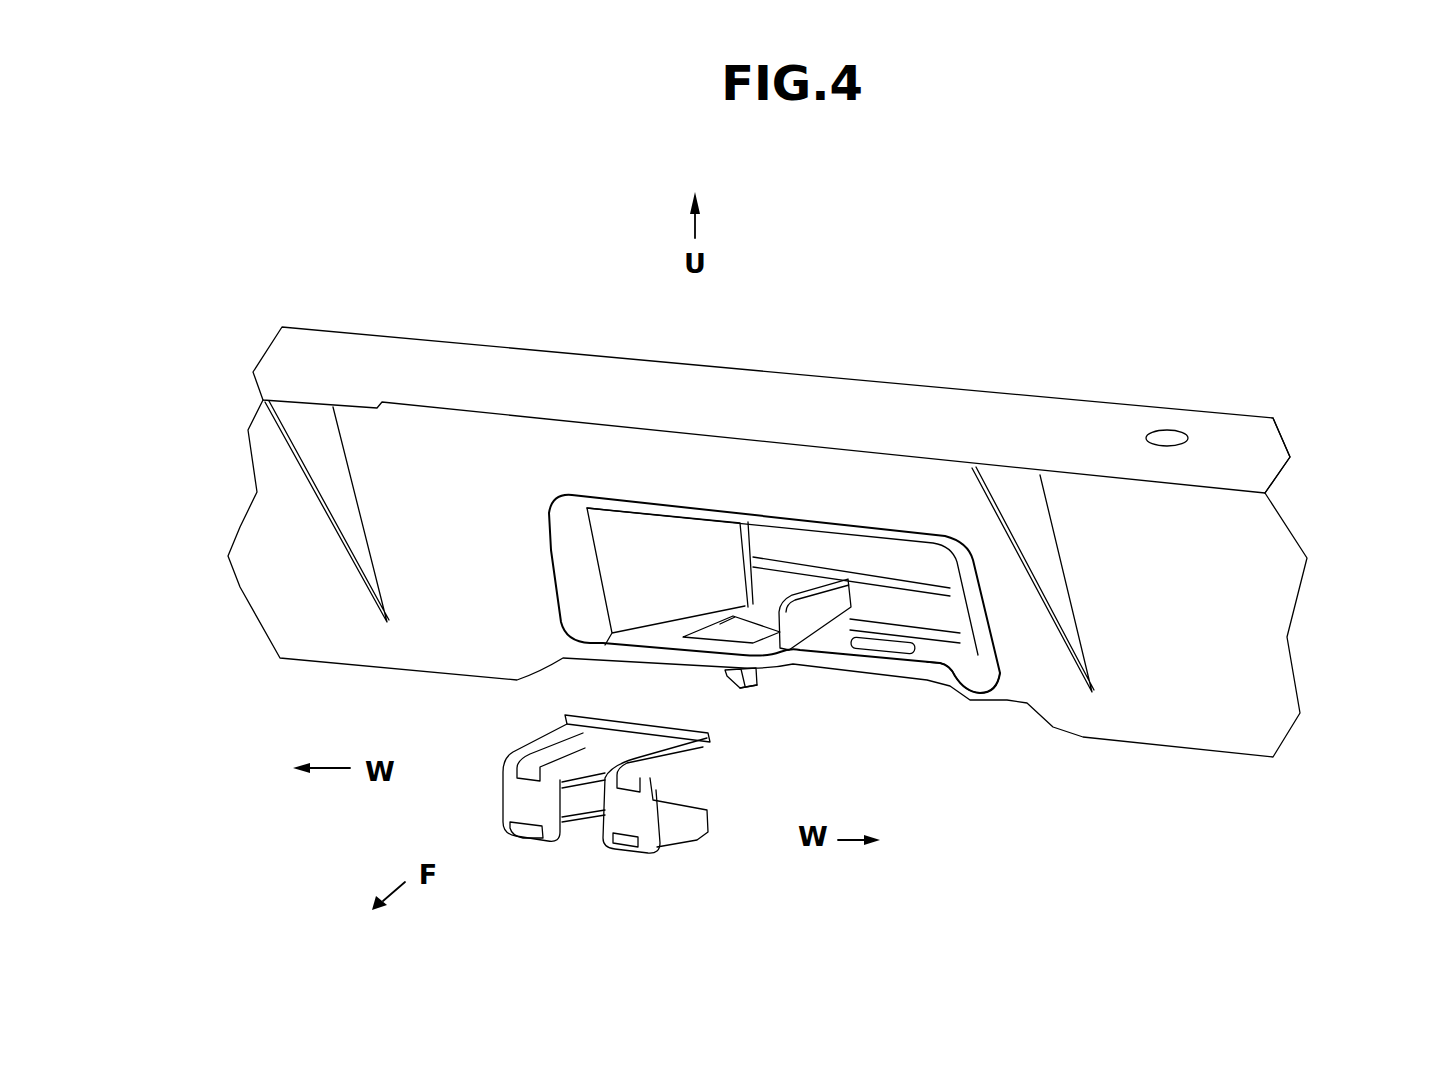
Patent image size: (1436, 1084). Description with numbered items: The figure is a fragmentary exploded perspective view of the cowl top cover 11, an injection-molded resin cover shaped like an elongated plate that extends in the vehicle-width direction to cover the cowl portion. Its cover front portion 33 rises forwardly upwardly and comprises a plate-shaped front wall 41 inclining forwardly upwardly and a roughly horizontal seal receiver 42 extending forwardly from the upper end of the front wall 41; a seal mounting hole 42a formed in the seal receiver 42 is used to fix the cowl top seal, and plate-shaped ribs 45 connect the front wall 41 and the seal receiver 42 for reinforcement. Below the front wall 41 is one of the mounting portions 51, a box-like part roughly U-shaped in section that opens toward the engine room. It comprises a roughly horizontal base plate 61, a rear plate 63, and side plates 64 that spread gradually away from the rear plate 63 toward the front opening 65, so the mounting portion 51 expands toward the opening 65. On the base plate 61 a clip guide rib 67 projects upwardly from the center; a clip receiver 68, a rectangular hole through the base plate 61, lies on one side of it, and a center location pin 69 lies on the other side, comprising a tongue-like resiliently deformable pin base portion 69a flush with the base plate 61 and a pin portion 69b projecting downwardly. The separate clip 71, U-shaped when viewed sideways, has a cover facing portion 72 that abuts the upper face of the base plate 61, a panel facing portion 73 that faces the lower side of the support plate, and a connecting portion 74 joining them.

The cowl top cover 11 is at (256, 263).
The cover front portion 33 is at (456, 418).
The front wall 41 is at (1286, 540).
The seal receiver 42 is at (1236, 422).
The seal mounting hole 42a is at (1164, 430).
The ribs 45 is at (308, 445).
The mounting portion 51 is at (930, 675).
The base plate 61 is at (846, 640).
The rear plate 63 is at (810, 540).
The side plates 64 is at (614, 568).
The opening 65 is at (973, 690).
The clip guide rib 67 is at (803, 628).
The clip receiver 68 is at (893, 648).
The center location pin 69 is at (718, 684).
The pin base portion 69a is at (717, 628).
The pin portion 69b is at (742, 690).
The clip 71 is at (645, 833).
The cover facing portion 72 is at (700, 760).
The panel facing portion 73 is at (690, 840).
The connecting portion 74 is at (622, 830).